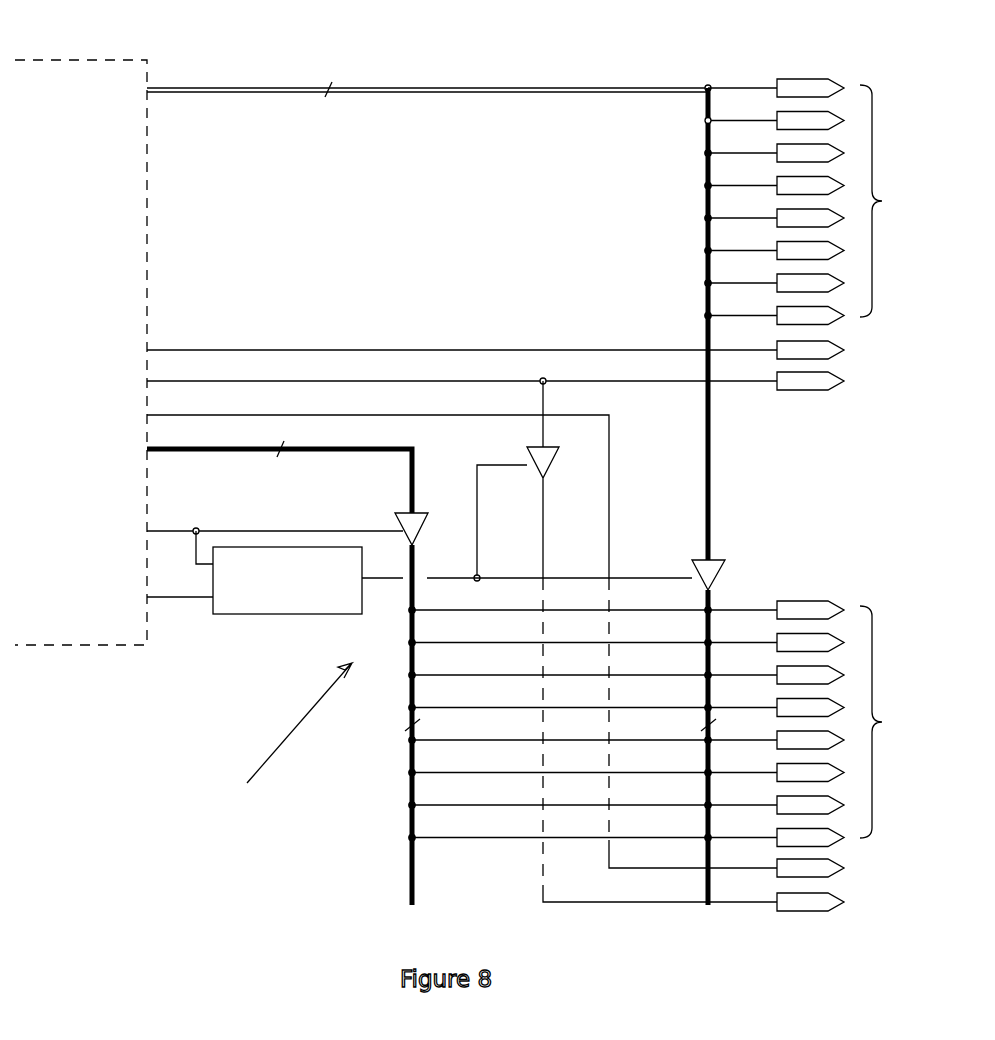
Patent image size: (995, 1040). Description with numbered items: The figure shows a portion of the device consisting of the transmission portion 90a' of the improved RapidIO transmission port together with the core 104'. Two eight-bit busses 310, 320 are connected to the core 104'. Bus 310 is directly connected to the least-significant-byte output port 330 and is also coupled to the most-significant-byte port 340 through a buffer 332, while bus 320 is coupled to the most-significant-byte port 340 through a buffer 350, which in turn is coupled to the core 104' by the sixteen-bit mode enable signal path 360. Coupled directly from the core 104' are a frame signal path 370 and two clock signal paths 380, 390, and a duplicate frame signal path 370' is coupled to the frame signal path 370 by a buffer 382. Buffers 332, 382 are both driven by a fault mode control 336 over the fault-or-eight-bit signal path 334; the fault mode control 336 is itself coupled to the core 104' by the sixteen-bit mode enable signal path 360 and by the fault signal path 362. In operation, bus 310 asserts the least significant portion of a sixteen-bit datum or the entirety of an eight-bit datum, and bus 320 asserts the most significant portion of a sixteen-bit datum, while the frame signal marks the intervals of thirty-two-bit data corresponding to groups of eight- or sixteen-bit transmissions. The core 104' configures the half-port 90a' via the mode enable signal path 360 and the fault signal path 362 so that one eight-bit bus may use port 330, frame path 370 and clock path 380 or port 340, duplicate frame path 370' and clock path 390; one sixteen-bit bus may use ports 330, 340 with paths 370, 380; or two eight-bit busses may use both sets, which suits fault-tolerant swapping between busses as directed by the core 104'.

The core 104' is at (81, 352).
The 8-bit bus 310 is at (358, 88).
The 8-bit bus 320 is at (318, 447).
The LSB/8 bit output port 330 is at (814, 319).
The buffer 332 is at (718, 576).
The fault/8 signal path 334 is at (627, 577).
The fault mode control 336 is at (263, 612).
The MSB port 340 is at (666, 724).
The buffer 350 is at (415, 512).
The 16 bit mode enable signal path 360 is at (312, 495).
The fault signal path 362 is at (167, 597).
The frame signal path 370 is at (515, 408).
The duplicate frame signal path 370' is at (721, 746).
The clock signal path 380 is at (515, 350).
The buffer 382 is at (538, 468).
The clock signal path 390 is at (518, 648).
The transmission portion 90a' is at (285, 742).